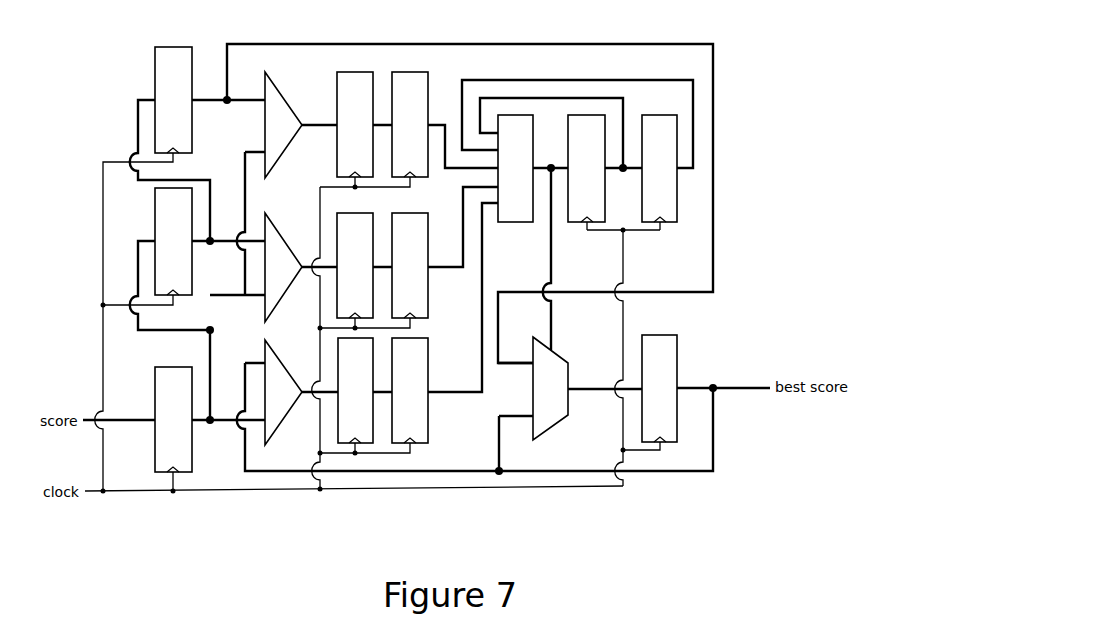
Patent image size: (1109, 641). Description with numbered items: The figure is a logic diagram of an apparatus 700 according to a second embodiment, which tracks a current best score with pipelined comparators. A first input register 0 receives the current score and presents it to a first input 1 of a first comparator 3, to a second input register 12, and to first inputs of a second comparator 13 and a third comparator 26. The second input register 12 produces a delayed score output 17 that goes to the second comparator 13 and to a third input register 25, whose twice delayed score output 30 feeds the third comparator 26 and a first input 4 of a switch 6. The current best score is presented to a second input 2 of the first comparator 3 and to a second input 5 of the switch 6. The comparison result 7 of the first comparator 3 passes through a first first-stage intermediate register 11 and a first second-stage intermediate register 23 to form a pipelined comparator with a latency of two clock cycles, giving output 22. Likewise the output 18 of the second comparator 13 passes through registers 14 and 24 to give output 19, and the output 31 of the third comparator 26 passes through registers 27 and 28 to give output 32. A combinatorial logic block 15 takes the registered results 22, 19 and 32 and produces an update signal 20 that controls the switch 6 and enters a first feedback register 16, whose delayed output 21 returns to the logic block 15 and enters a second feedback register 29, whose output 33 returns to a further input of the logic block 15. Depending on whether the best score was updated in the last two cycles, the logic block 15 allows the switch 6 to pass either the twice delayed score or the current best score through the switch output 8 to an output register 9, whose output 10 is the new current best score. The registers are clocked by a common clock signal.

The apparatus 700 is at (787, 75).
The first input register 0 is at (173, 419).
The second input register 12 is at (173, 241).
The third input register 25 is at (173, 100).
The first comparator 3 is at (283, 392).
The second comparator 13 is at (283, 267).
The third comparator 26 is at (283, 125).
The first input of the first comparator 1 is at (174, 409).
The second input of the first comparator 2 is at (475, 409).
The result of the comparison 7 is at (319, 382).
The output of the second comparator 18 is at (319, 253).
The output of the third comparator 31 is at (319, 112).
The first first-stage intermediate register 11 is at (355, 390).
The first second-stage intermediate register 23 is at (410, 390).
The second first-stage intermediate register 14 is at (355, 265).
The second second-stage intermediate register 24 is at (410, 265).
The third first-stage intermediate register 27 is at (355, 124).
The third second-stage intermediate register 28 is at (410, 124).
The output of the first second-stage intermediate register 22 is at (463, 297).
The output of the second second-stage intermediate register 19 is at (463, 227).
The output of the third second-stage intermediate register 32 is at (463, 133).
The combinatorial logic block 15 is at (515, 168).
The output of the combinatorial logic block 20 is at (550, 246).
The first feedback register 16 is at (586, 168).
The output of the first feedback register 21 is at (565, 134).
The second feedback register 29 is at (659, 168).
The output of the second feedback register 33 is at (583, 133).
The output of the third input register 30 is at (452, 203).
The output of the second input register 17 is at (197, 184).
The switch 6 is at (550, 388).
The first input of the switch 4 is at (515, 353).
The second input of the switch 5 is at (514, 436).
The output of the switch 8 is at (605, 378).
The output register 9 is at (659, 388).
The output of the output register 10 is at (723, 380).